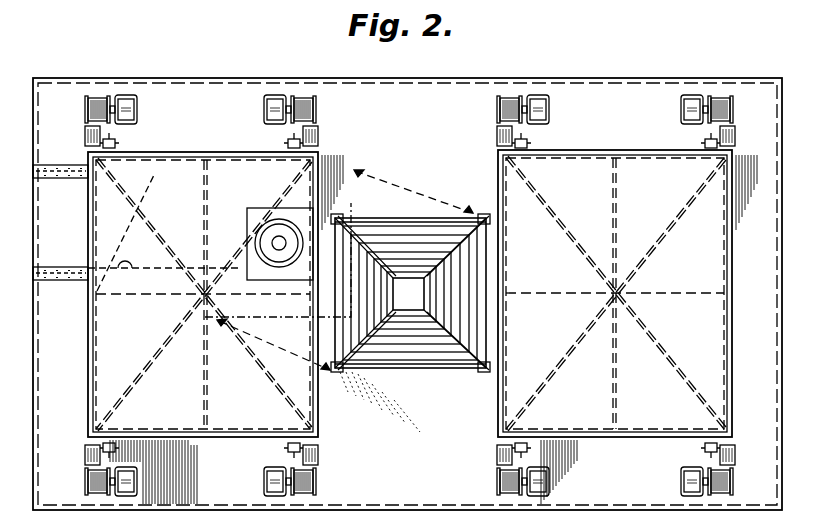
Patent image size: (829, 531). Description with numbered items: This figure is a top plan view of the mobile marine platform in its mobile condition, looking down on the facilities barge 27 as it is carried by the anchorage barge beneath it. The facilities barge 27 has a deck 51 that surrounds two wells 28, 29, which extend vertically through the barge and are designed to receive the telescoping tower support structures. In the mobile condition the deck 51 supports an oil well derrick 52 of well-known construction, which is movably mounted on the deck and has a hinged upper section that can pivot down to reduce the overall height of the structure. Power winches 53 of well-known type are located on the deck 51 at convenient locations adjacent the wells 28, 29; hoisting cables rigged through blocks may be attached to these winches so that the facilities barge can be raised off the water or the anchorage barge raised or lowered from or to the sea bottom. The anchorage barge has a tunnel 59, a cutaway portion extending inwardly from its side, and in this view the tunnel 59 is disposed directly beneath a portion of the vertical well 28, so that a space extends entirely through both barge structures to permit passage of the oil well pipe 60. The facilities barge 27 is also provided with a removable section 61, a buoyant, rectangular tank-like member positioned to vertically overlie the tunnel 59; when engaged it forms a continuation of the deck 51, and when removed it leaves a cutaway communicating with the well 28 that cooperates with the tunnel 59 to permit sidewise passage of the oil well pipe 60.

The facilities barge 27 is at (414, 78).
The well 28 is at (200, 440).
The well 29 is at (600, 440).
The deck 51 is at (420, 147).
The oil well derrick 52 is at (256, 318).
The power winch 53 is at (138, 107).
The tunnel 59 is at (97, 291).
The oil well pipe 60 is at (266, 241).
The removable section 61 is at (52, 227).